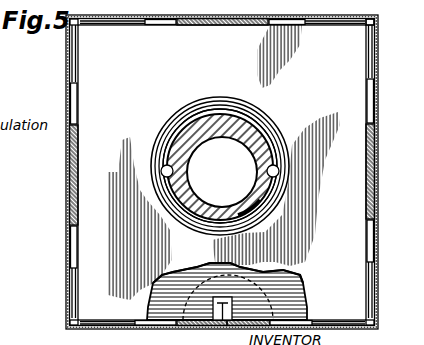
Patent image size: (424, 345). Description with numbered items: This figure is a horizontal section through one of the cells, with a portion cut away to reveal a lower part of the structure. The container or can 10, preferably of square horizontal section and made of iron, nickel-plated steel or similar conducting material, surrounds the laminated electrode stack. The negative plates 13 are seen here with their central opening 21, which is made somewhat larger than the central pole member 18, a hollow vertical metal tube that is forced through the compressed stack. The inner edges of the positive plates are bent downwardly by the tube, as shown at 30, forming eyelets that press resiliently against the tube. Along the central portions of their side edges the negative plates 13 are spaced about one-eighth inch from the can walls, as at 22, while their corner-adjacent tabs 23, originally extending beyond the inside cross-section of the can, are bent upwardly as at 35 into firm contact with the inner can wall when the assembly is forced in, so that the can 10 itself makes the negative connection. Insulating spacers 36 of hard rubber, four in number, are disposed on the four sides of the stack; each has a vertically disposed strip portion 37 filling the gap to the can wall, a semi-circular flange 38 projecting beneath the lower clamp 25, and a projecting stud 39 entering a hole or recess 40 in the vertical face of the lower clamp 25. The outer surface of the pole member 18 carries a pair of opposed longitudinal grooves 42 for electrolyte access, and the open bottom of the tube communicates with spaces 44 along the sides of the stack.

The container or can 10 is at (68, 189).
The negative plates 13 is at (85, 198).
The central pole member 18 is at (258, 136).
The central opening 21 is at (265, 115).
The spacing of negative plate side edges from can walls 22 is at (276, 28).
The corner-adjacent tabs 23 is at (85, 47).
The lower clamp 25 is at (352, 30).
The deformed inner edge of positive plate 30 is at (180, 127).
The bent-up tab portion 35 is at (110, 27).
The insulating spacers 36 is at (234, 32).
The vertically disposed strip portion 37 is at (70, 150).
The semi-circular flange 38 is at (205, 332).
The projecting stud 39 is at (265, 283).
The hole or recess 40 is at (265, 270).
The longitudinal grooves 42 is at (157, 168).
The spaces 44 is at (150, 28).